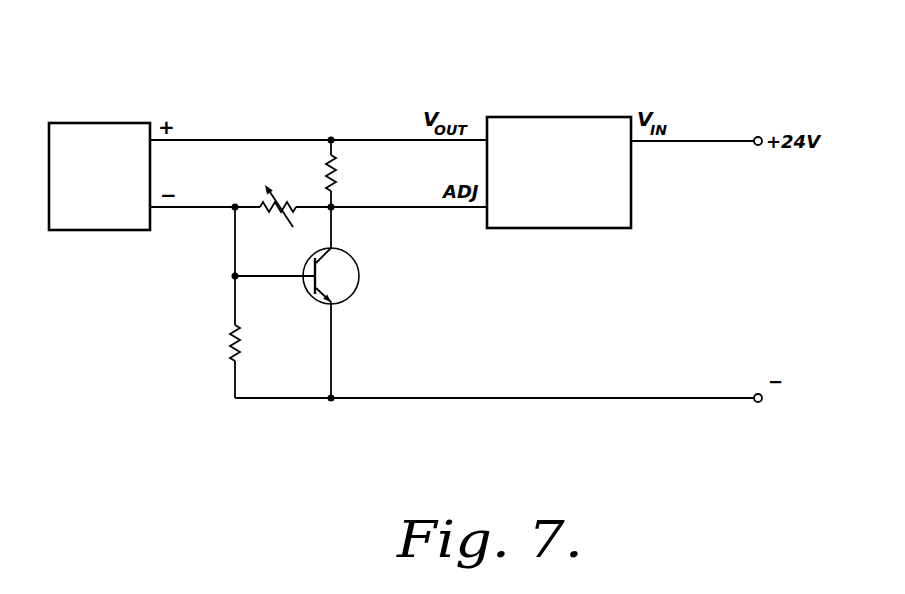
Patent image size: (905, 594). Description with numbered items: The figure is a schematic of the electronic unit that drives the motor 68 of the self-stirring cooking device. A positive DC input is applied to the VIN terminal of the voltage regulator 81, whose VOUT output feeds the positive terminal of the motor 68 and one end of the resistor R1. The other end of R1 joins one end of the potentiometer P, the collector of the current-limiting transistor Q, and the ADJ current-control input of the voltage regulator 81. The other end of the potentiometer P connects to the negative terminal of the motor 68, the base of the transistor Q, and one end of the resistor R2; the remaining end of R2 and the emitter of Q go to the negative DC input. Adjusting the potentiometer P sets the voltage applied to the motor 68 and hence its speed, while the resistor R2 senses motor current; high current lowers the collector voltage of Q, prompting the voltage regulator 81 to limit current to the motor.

The motor 68 is at (91, 123).
The voltage regulator 81 is at (567, 117).
The resistor R1 is at (351, 173).
The resistor R2 is at (219, 343).
The potentiometer P is at (278, 191).
The current-limiting transistor Q is at (343, 276).